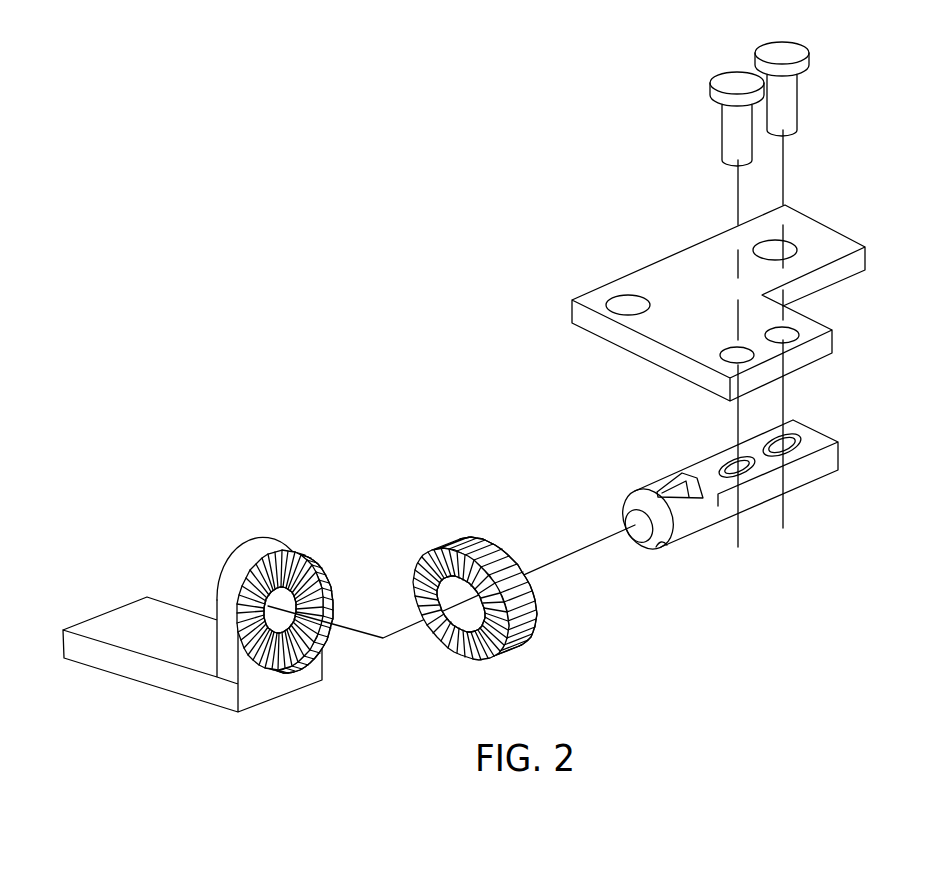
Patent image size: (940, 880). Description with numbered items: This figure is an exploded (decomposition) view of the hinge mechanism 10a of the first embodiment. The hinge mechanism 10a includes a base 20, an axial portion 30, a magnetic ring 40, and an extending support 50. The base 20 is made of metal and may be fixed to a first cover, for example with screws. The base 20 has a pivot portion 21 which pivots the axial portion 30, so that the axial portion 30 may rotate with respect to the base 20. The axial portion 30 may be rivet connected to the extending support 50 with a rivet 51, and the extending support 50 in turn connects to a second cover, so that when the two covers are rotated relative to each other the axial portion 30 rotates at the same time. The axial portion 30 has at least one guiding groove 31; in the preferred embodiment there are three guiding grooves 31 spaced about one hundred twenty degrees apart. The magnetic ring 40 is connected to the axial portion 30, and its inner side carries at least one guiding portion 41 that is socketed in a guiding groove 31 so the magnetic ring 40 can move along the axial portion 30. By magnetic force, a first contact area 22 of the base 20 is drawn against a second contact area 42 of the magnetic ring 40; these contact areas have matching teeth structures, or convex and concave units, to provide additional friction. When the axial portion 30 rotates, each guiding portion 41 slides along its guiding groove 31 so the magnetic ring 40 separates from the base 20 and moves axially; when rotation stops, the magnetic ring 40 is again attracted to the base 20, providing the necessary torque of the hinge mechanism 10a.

The hinge mechanism 10a is at (270, 278).
The base 20 is at (122, 615).
The pivot portion 21 is at (296, 628).
The first contact area 22 is at (302, 548).
The axial portion 30 is at (833, 457).
The guiding groove 31 is at (680, 485).
The magnetic ring 40 is at (463, 540).
The guiding portion 41 is at (431, 592).
The second contact area 42 is at (447, 645).
The extending support 50 is at (652, 270).
The rivet 51 is at (730, 120).